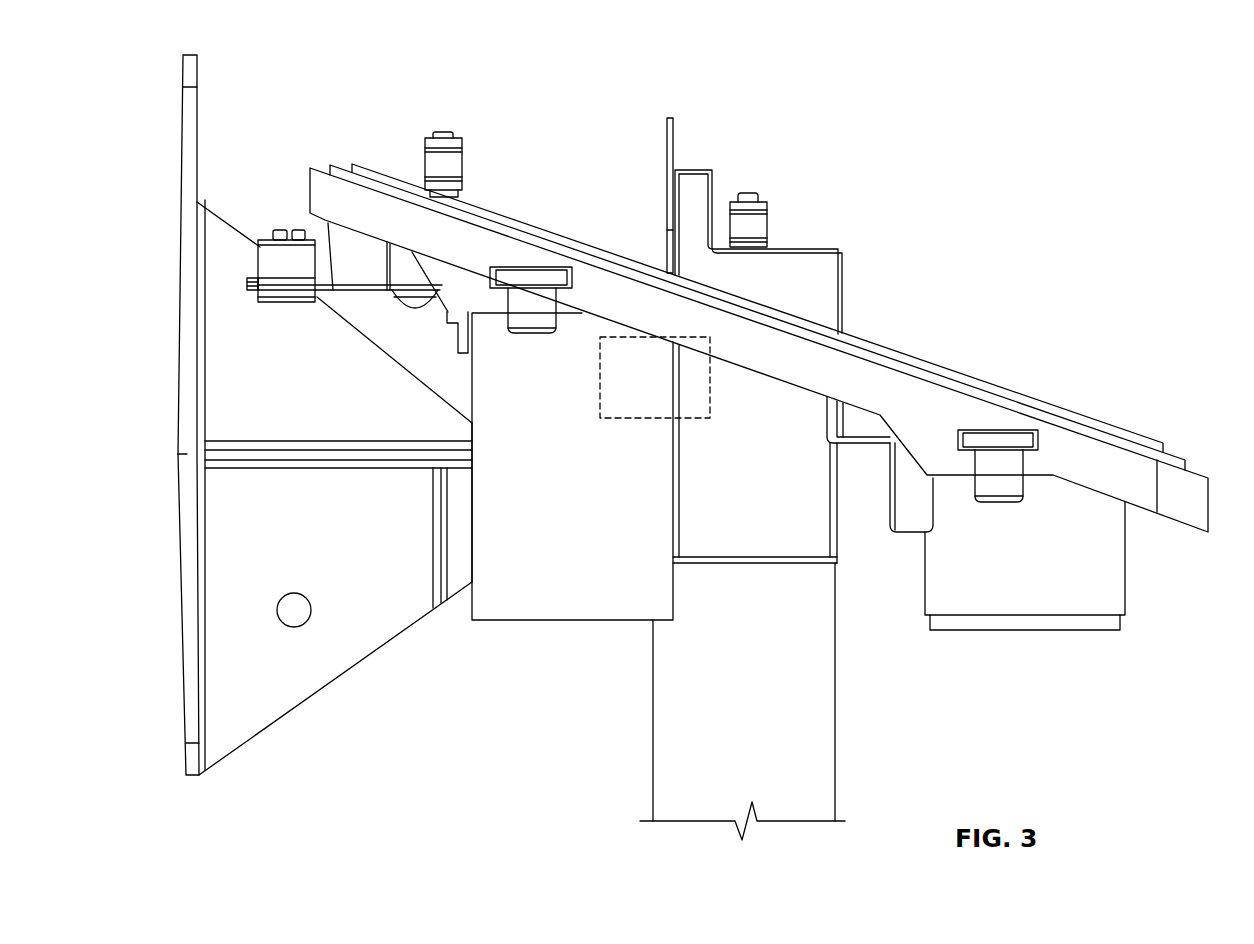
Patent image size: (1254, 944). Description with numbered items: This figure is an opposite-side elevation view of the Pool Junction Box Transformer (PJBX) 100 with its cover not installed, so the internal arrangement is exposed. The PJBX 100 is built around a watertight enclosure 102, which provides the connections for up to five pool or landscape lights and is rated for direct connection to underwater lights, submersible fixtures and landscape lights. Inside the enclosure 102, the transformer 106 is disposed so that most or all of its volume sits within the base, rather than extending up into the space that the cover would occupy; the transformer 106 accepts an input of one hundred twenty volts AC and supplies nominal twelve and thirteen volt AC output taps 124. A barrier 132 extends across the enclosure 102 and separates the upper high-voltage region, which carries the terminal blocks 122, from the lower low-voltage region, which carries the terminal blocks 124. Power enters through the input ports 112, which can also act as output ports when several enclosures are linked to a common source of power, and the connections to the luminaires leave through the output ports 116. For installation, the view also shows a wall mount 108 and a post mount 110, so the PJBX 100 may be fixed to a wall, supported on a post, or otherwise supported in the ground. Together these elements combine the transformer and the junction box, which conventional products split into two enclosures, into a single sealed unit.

The Pool Junction Box Transformer (PJBX) 100 is at (1022, 94).
The enclosure 102 is at (1180, 500).
The transformer 106 is at (660, 391).
The wall mount 108 is at (190, 157).
The post mount 110 is at (808, 737).
The input ports 112 is at (553, 573).
The output ports 116 is at (1010, 590).
The terminal blocks 122 is at (422, 158).
The terminal blocks (output taps) 124 is at (770, 236).
The barrier 132 is at (667, 136).